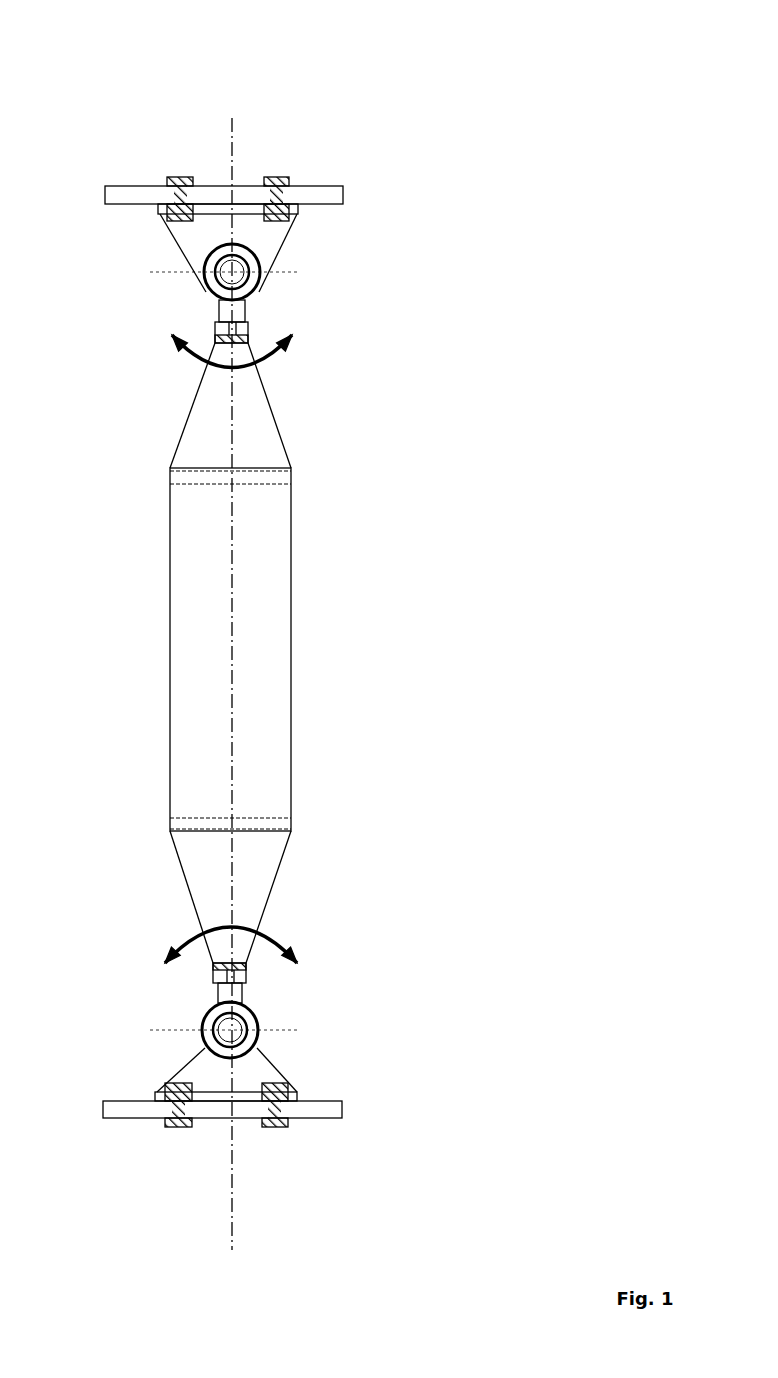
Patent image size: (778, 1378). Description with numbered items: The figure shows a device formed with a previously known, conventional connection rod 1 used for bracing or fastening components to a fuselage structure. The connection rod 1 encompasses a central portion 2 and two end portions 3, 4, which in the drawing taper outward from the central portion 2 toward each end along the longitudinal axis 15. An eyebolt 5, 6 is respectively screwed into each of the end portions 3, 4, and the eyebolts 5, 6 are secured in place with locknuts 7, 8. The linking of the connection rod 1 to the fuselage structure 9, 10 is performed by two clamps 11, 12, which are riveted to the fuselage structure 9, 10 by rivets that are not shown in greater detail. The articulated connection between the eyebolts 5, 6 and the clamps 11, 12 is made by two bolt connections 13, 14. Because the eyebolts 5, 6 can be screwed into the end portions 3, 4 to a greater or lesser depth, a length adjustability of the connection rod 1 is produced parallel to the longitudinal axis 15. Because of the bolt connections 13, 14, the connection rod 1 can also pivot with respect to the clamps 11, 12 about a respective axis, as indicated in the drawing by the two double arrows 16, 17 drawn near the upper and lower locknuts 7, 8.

The connection rod 1 is at (252, 73).
The central portion 2 is at (270, 578).
The end portion 3 is at (263, 425).
The end portion 4 is at (255, 870).
The eyebolt 5 is at (247, 303).
The eyebolt 6 is at (240, 995).
The locknut 7 is at (222, 326).
The locknut 8 is at (223, 974).
The fuselage structure 9 is at (125, 195).
The fuselage structure 10 is at (322, 1110).
The clamp 11 is at (272, 242).
The clamp 12 is at (267, 1060).
The bolt connection 13 is at (227, 270).
The bolt connection 14 is at (222, 1028).
The longitudinal axis 15 is at (235, 165).
The double arrow 16 is at (273, 355).
The double arrow 17 is at (255, 928).